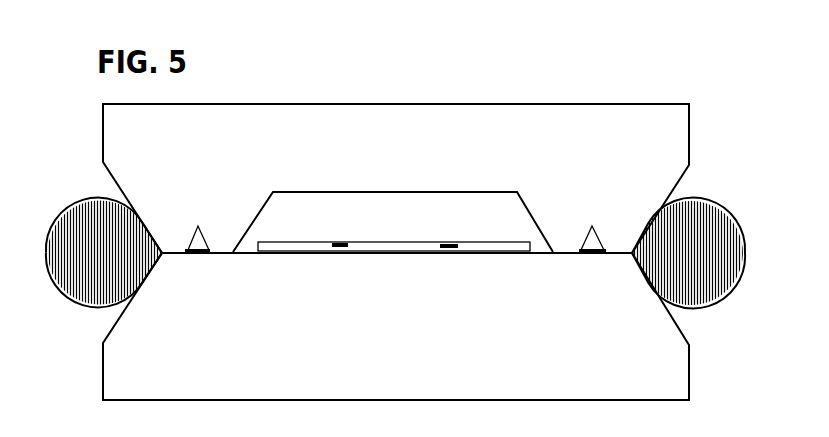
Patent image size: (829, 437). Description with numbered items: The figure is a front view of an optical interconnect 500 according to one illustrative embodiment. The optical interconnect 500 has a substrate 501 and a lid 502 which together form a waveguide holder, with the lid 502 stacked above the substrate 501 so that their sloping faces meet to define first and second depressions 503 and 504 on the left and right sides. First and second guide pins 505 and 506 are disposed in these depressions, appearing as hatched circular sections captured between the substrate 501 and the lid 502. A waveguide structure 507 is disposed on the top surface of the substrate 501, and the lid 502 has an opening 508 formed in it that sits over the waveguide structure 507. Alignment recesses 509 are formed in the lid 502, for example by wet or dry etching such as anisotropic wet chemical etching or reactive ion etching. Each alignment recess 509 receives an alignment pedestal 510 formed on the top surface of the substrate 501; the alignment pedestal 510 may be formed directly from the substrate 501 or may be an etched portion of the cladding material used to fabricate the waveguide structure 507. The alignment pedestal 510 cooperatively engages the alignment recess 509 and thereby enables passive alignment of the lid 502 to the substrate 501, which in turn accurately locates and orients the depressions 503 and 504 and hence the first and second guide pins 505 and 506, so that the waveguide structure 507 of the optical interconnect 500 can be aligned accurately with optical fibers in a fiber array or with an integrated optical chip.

The optical interconnect 500 is at (774, 100).
The substrate 501 is at (678, 357).
The lid 502 is at (683, 133).
The first depression 503 is at (703, 312).
The second depression 504 is at (113, 322).
The first guide pin 505 is at (720, 207).
The second guide pin 506 is at (72, 212).
The waveguide structure 507 is at (420, 242).
The opening 508 is at (514, 203).
The alignment recesses 509 is at (200, 227).
The alignment pedestal 510 is at (397, 269).